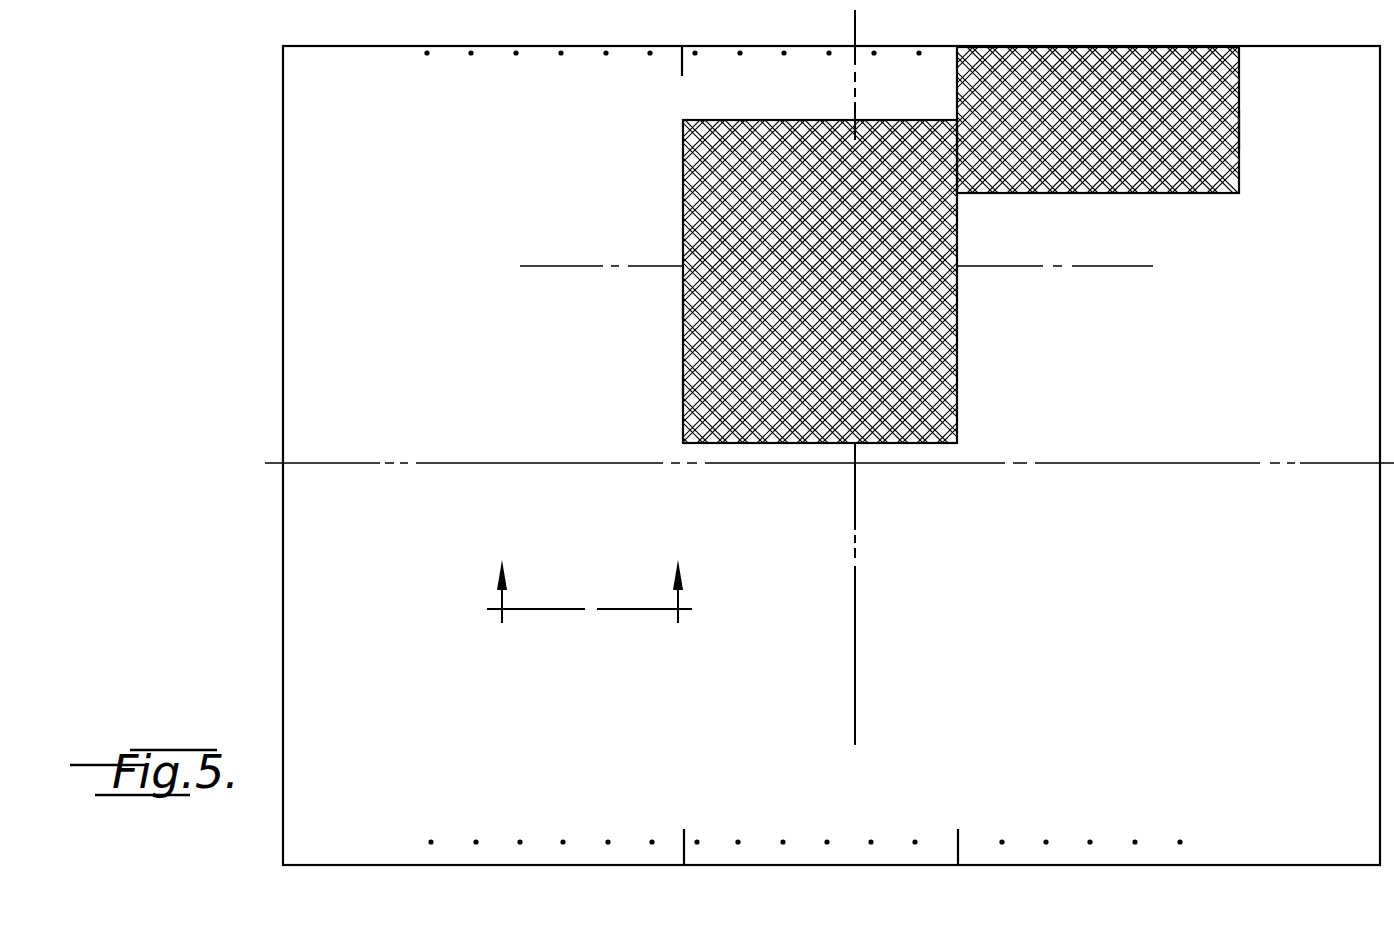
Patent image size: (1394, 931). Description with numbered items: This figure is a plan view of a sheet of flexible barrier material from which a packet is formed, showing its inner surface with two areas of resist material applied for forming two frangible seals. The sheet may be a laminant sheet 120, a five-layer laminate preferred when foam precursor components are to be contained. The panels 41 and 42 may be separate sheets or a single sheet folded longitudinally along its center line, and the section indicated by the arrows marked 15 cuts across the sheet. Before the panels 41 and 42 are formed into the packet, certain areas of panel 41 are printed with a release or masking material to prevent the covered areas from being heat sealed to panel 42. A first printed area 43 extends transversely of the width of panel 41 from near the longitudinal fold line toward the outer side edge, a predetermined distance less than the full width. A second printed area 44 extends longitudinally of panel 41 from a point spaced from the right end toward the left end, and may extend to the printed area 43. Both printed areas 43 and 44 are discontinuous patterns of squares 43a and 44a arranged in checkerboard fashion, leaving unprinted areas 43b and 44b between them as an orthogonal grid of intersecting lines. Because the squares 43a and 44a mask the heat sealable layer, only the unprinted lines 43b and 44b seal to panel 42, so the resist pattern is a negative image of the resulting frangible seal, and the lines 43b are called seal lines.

The section line 15 is at (581, 614).
The panel 41 is at (338, 132).
The panel 42 is at (1087, 626).
The first printed area 43 is at (683, 207).
The printed areas 43a is at (683, 315).
The unprinted areas 43b is at (683, 388).
The second printed area 44 is at (1172, 195).
The printed areas 44a is at (1217, 140).
The unprinted areas 44b is at (1062, 190).
The laminant sheet 120 is at (272, 313).